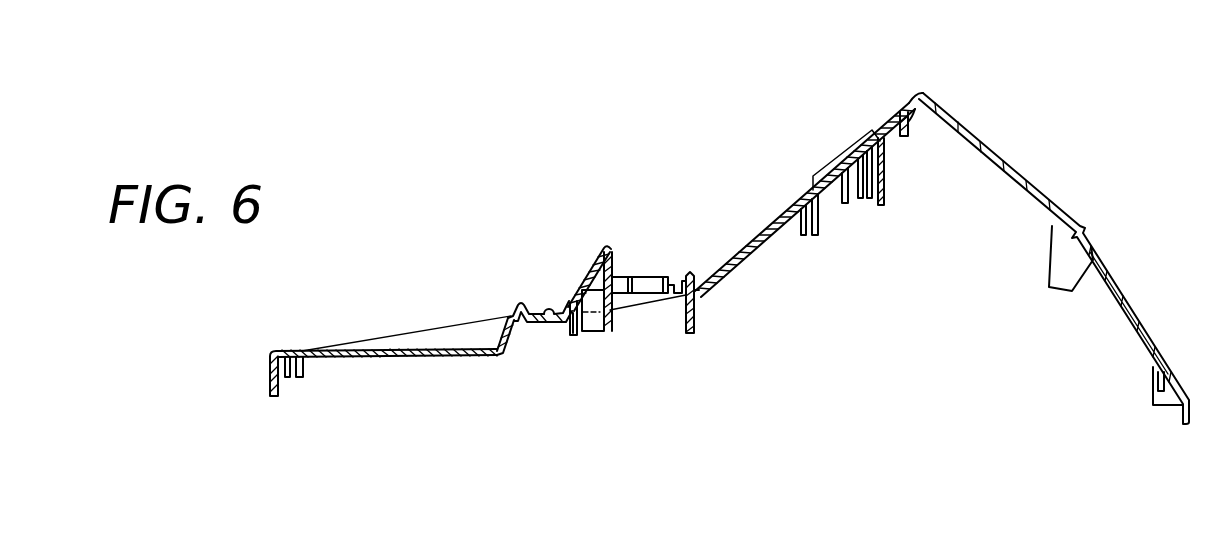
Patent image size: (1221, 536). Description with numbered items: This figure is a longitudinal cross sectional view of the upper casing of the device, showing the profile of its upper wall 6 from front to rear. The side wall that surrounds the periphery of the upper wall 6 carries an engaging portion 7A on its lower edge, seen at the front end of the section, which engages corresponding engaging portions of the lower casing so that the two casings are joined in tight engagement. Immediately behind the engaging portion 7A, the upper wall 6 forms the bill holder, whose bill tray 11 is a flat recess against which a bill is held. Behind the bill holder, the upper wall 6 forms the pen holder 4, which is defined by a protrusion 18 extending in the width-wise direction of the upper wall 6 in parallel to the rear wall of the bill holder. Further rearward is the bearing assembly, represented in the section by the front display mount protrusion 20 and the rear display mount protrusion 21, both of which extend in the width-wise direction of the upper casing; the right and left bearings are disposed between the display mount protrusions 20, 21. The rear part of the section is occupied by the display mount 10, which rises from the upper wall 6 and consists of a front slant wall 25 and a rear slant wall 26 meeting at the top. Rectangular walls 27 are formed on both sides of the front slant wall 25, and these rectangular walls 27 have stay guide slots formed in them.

The engaging portion 7A is at (272, 402).
The bill tray 11 is at (408, 349).
The upper wall 6 is at (470, 320).
The protrusion 18 is at (527, 303).
The pen holder 4 is at (550, 317).
The front display mount protrusion 20 is at (618, 252).
The rear display mount protrusion 21 is at (688, 272).
The front slant wall 25 is at (783, 213).
The rectangular walls 27 is at (876, 124).
The display mount 10 is at (904, 89).
The rear slant wall 26 is at (993, 150).